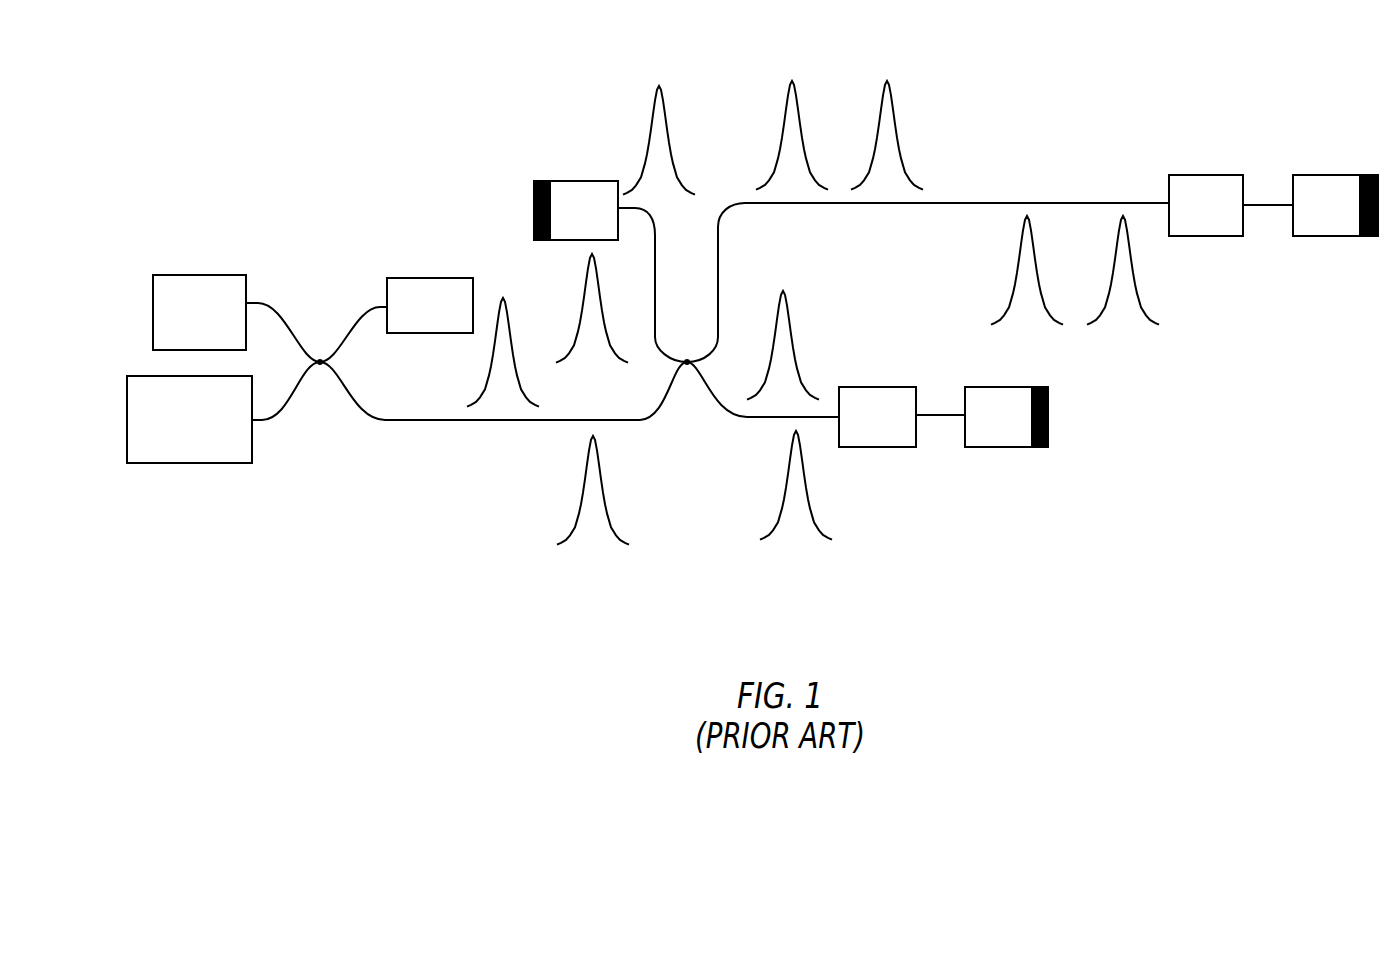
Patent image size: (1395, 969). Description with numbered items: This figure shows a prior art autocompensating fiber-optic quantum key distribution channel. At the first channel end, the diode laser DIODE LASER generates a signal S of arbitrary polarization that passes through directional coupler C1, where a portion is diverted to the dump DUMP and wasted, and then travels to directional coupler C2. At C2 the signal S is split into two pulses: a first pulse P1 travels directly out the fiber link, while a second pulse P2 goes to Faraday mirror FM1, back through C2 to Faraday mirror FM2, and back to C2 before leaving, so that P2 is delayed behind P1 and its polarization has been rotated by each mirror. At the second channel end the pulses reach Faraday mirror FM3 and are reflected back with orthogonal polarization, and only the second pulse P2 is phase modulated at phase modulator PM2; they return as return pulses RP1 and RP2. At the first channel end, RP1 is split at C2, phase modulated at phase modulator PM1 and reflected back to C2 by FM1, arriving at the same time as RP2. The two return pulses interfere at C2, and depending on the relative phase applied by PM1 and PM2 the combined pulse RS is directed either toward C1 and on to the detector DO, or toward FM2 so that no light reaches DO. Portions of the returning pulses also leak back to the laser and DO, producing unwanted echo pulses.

The detector DO is at (199, 312).
The diode laser DIODE LASER is at (189, 419).
The dump DUMP is at (430, 305).
The directional coupler C1 is at (318, 338).
The directional coupler C2 is at (687, 337).
The Faraday mirror FM1 is at (1006, 417).
The Faraday mirror FM2 is at (576, 210).
The Faraday mirror FM3 is at (1335, 205).
The phase modulator PM1 is at (877, 417).
The phase modulator PM2 is at (1206, 205).
The signal S is at (503, 352).
The combined pulse RS is at (599, 490).
The first pulse P1 is at (892, 135).
The second pulse P2 is at (730, 240).
The return pulse RP1 is at (820, 378).
The return pulse RP2 is at (1134, 270).